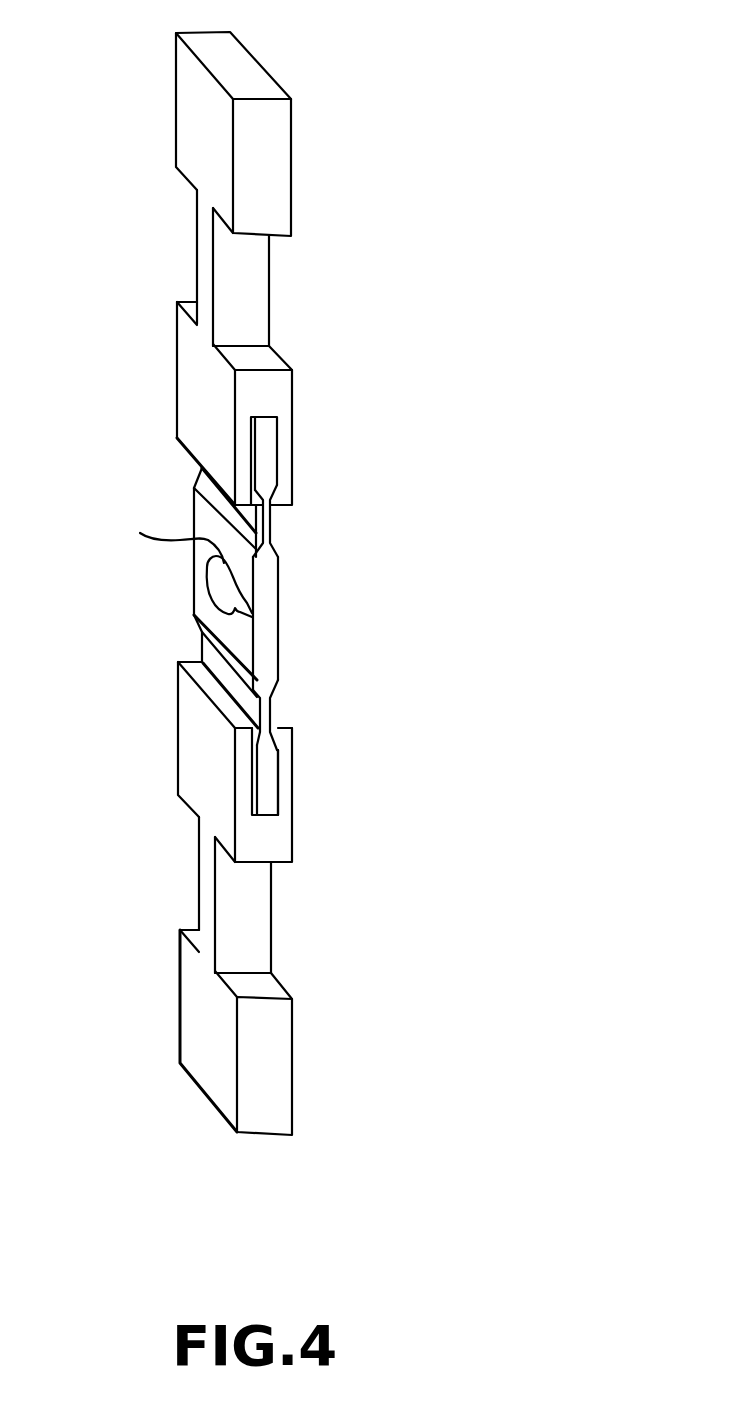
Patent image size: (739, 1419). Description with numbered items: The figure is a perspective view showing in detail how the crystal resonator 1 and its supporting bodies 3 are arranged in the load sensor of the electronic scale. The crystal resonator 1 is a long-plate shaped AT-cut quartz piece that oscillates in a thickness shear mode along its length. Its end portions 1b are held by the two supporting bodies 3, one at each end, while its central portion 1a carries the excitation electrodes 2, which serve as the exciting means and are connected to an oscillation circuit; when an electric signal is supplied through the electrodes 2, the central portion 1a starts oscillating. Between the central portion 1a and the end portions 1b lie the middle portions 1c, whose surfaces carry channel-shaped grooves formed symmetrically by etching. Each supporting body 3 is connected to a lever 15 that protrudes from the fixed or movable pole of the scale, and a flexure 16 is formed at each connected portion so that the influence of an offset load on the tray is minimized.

The crystal resonator 1 is at (315, 616).
The central portion 1a is at (278, 625).
The end portions 1b is at (270, 450).
The middle portions 1c is at (265, 521).
The excitation electrode 2 is at (193, 578).
The supporting body 3 is at (188, 393).
The lever 15 is at (182, 112).
The flexure 16 is at (190, 250).